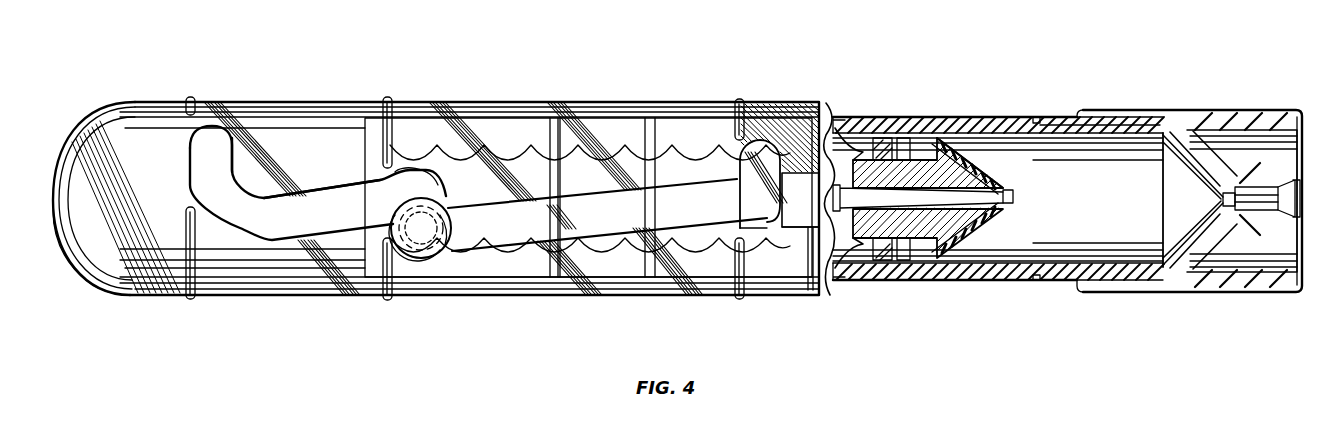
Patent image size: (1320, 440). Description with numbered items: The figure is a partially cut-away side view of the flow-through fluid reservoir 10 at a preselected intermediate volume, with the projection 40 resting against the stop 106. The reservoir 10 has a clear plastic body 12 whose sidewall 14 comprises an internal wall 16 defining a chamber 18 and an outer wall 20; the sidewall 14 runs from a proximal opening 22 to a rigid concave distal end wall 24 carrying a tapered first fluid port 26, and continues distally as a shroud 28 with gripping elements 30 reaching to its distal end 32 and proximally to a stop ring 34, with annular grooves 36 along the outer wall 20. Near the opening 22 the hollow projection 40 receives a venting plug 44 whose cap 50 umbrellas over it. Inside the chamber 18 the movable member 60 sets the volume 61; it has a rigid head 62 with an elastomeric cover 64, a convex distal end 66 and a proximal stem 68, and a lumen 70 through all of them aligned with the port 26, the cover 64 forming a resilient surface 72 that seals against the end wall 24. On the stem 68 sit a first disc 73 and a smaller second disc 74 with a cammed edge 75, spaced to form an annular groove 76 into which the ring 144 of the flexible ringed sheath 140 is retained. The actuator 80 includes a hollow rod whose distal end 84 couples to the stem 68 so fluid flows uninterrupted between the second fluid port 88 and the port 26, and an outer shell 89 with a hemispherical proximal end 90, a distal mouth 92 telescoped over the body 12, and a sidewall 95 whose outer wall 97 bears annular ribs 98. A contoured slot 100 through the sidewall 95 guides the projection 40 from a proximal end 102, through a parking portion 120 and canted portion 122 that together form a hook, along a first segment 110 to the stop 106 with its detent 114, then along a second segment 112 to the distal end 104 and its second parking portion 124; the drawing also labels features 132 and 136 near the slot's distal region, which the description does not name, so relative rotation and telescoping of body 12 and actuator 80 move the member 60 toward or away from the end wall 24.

The flow-through fluid reservoir 10 is at (950, 48).
The body 12 is at (983, 110).
The sidewall 14 is at (1064, 272).
The internal wall 16 is at (1104, 146).
The chamber 18 is at (1131, 234).
The outer wall 20 is at (1068, 116).
The proximal opening 22 is at (360, 186).
The distal end wall 24 is at (1194, 244).
The first fluid port 26 is at (1232, 205).
The shroud 28 is at (1223, 129).
The gripping elements 30 is at (1173, 110).
The distal end 32 is at (1303, 110).
The stop ring 34 is at (1082, 291).
The annular grooves 36 is at (555, 231).
The projection 40 is at (398, 220).
The venting plug 44 is at (425, 260).
The cap 50 is at (413, 259).
The movable member 60 is at (945, 132).
The volume 61 is at (1098, 201).
The head 62 is at (953, 225).
The cover 64 is at (994, 170).
The distal end 66 is at (1013, 183).
The proximal stem 68 is at (835, 232).
The lumen 70 is at (905, 200).
The resilient surface 72 is at (992, 232).
The first disc 73 is at (909, 139).
The second disc 74 is at (863, 150).
The cammed edge 75 is at (864, 258).
The annular groove 76 is at (889, 143).
The actuator 80 is at (276, 101).
The distal end 84 is at (837, 204).
The second fluid port 88 is at (50, 152).
The shell 89 is at (302, 272).
The proximal end 90 is at (50, 243).
The distal mouth 92 is at (827, 107).
The sidewall 95 is at (540, 285).
The outer wall 97 is at (258, 263).
The annular ribs 98 is at (389, 301).
The slot 100 is at (484, 199).
The proximal end 102 is at (190, 165).
The distal end 104 is at (790, 163).
The stop 106 is at (437, 185).
The first segment 110 is at (310, 192).
The second segment 112 is at (600, 240).
The detent 114 is at (447, 246).
The parking portion 120 is at (208, 100).
The canted portion 122 is at (224, 222).
The second parking portion 124 is at (760, 140).
The block wall 132 is at (806, 218).
The slot bottom 136 is at (765, 218).
The ringed sheath 140 is at (626, 135).
The ring 144 is at (876, 252).